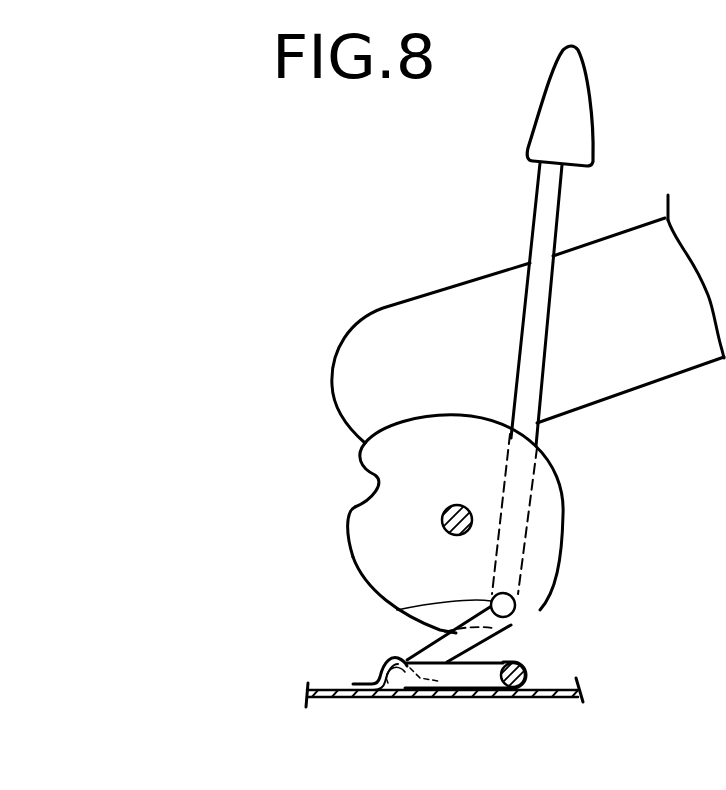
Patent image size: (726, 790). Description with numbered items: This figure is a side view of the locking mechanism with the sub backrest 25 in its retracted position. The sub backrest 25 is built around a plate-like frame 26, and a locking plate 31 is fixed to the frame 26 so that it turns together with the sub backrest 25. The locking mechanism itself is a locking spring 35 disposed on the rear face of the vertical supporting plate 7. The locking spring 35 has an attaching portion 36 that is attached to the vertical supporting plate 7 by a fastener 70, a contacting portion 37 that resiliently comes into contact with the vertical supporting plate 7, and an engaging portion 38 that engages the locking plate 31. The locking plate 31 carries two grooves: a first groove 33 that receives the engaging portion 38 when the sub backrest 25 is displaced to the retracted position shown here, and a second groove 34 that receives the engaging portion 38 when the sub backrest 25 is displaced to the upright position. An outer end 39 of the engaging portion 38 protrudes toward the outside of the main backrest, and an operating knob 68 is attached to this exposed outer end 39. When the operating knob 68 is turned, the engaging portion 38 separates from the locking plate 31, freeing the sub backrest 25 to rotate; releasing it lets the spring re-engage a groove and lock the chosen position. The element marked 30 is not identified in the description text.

The vertical supporting plate 7 is at (340, 700).
The sub backrest 25 is at (627, 362).
The plate-like frame 26 is at (413, 338).
The pivot pin 30 is at (450, 503).
The locking plate 31 is at (360, 531).
The first groove 33 is at (515, 601).
The second groove 34 is at (375, 490).
The locking spring 35 is at (470, 675).
The attaching portion 36 is at (397, 700).
The contacting portion 37 is at (526, 670).
The engaging portion 38 is at (397, 610).
The outer end 39 is at (545, 210).
The operating knob 68 is at (575, 118).
The fastener 70 is at (385, 658).